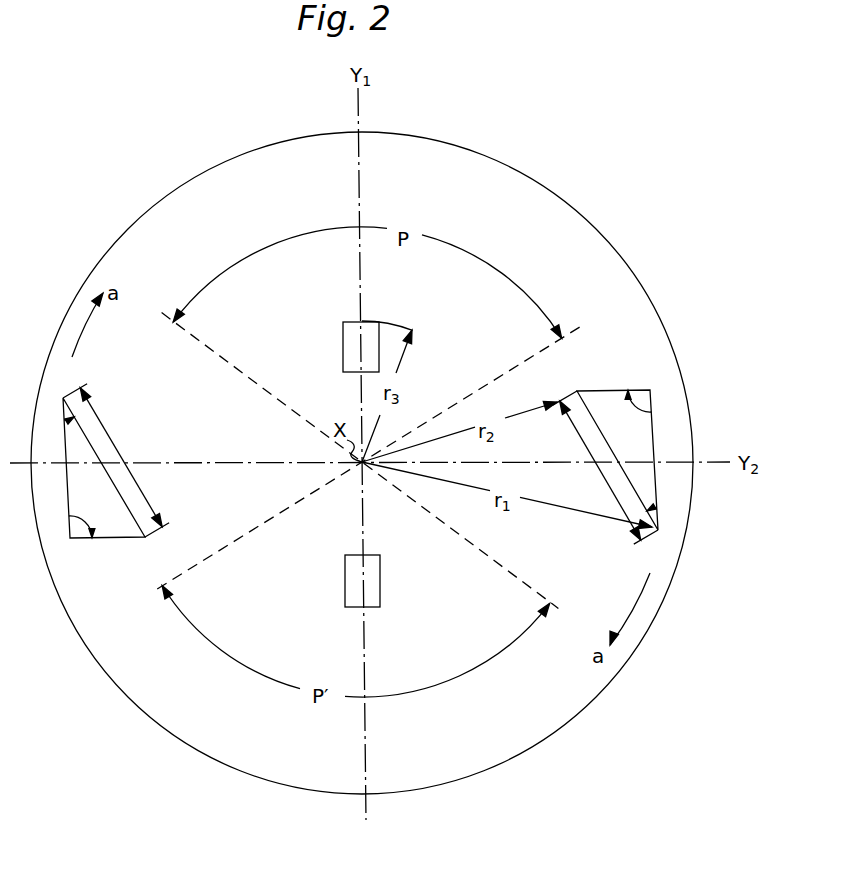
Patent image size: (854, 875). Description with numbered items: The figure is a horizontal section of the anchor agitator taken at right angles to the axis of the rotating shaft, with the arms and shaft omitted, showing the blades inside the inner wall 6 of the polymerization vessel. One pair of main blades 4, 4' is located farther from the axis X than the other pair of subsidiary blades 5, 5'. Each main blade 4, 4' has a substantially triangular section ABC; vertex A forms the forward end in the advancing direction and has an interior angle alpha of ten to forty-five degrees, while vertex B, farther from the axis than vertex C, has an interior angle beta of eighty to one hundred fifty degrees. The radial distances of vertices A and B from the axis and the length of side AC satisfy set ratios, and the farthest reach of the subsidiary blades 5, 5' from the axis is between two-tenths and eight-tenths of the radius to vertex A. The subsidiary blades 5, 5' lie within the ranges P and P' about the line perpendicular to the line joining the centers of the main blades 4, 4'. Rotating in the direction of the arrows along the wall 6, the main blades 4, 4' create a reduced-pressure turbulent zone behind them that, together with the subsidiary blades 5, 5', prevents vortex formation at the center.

The main agitating blade 4 is at (613, 447).
The main agitating blade 4' is at (102, 471).
The subsidiary agitating blade 5 is at (342, 344).
The subsidiary agitating blade 5' is at (380, 579).
The inner wall of the polymerization vessel 6 is at (530, 742).